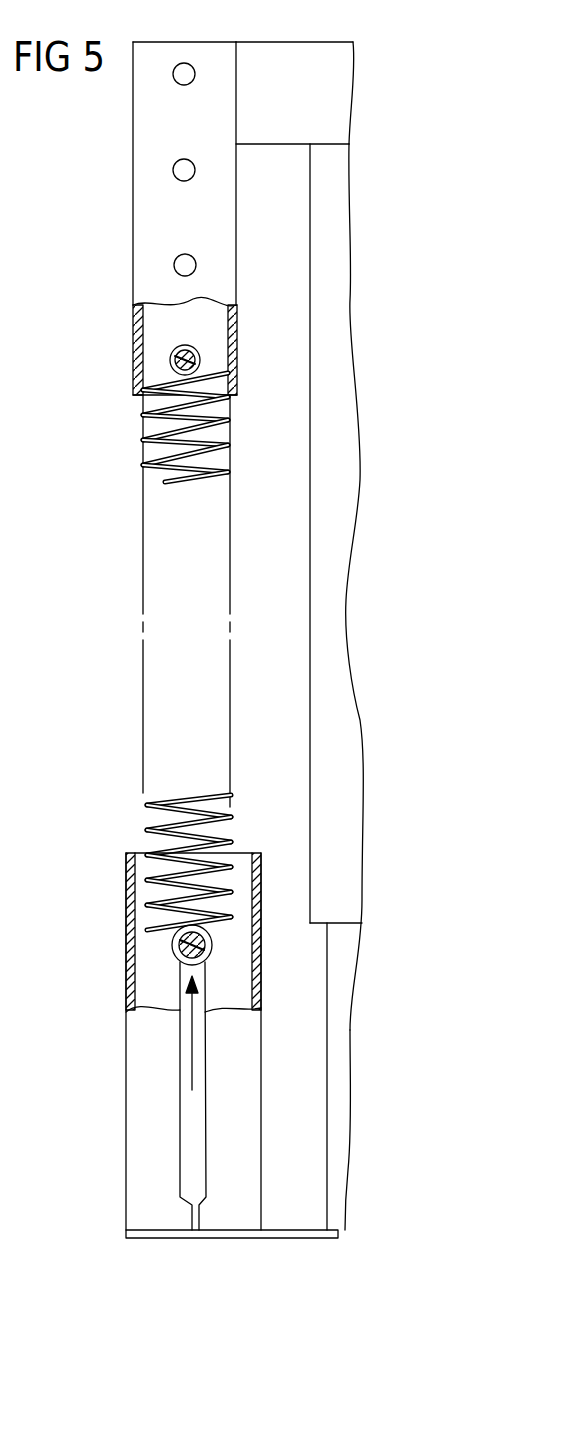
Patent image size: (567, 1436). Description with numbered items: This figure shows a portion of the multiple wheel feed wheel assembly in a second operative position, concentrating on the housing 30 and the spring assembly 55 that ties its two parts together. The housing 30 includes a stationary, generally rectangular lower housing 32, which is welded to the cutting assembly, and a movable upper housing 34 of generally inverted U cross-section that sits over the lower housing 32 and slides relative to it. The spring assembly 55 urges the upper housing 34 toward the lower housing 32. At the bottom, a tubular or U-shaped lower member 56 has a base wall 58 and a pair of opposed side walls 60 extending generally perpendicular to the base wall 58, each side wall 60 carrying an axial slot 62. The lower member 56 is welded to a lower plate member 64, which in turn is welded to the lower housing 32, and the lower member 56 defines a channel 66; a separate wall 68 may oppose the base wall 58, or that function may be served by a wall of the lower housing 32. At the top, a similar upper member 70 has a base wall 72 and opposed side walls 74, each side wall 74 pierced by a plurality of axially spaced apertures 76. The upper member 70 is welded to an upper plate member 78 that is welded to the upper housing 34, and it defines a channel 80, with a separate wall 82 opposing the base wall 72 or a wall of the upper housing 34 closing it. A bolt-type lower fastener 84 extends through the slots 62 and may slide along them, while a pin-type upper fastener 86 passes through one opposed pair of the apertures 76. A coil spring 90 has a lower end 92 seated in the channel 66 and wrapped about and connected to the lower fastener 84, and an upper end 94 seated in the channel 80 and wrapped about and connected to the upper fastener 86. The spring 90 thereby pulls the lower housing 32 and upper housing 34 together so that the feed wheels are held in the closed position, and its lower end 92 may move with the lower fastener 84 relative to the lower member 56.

The housing 30 is at (299, 214).
The lower housing 32 is at (348, 1048).
The upper housing 34 is at (350, 763).
The spring assembly 55 is at (246, 447).
The lower member 56 is at (126, 1175).
The base wall 58 is at (126, 935).
The side walls 60 is at (138, 1030).
The slot 62 is at (182, 1126).
The lower plate member 64 is at (338, 1231).
The channel 66 is at (141, 912).
The separate wall 68 is at (258, 973).
The upper member 70 is at (131, 80).
The base wall 72 is at (133, 328).
The side walls 74 is at (143, 116).
The apertures 76 is at (176, 172).
The upper plate member 78 is at (333, 50).
The channel 80 is at (198, 323).
The separate wall 82 is at (231, 353).
The lower fastener 84 is at (213, 935).
The upper fastener 86 is at (170, 365).
The spring 90 is at (182, 482).
The lower end 92 is at (173, 951).
The upper end 94 is at (175, 347).